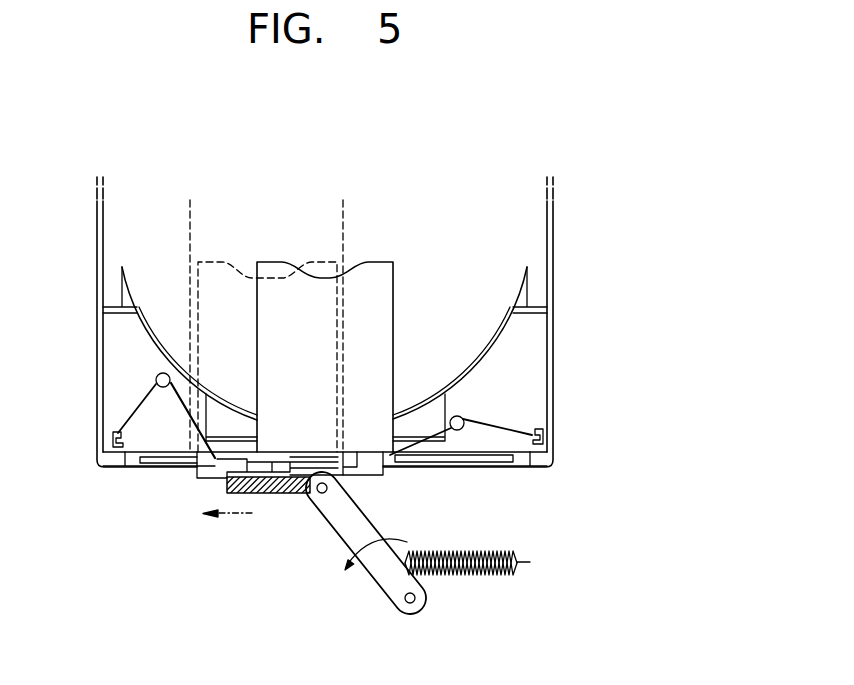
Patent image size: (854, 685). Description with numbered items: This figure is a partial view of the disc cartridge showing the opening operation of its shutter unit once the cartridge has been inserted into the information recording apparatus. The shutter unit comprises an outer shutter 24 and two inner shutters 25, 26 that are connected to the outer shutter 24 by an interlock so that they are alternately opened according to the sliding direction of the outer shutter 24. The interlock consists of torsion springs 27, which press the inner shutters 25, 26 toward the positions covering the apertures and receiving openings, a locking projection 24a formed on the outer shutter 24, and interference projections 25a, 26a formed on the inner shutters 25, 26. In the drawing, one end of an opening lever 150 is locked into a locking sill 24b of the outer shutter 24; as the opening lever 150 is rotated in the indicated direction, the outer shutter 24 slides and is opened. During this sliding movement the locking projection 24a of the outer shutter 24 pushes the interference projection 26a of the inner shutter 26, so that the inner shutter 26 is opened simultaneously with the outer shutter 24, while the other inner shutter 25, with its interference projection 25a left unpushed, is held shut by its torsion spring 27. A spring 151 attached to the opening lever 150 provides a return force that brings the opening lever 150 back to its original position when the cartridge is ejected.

The outer shutter 24 is at (344, 228).
The locking projection 24a is at (275, 465).
The locking sill 24b is at (255, 497).
The inner shutter 25 is at (393, 342).
The interference projection 25a is at (380, 463).
The inner shutter 26 is at (198, 325).
The interference projection 26a is at (233, 462).
The torsion spring 27 is at (133, 410).
The opening lever 150 is at (377, 574).
The spring 151 is at (472, 575).